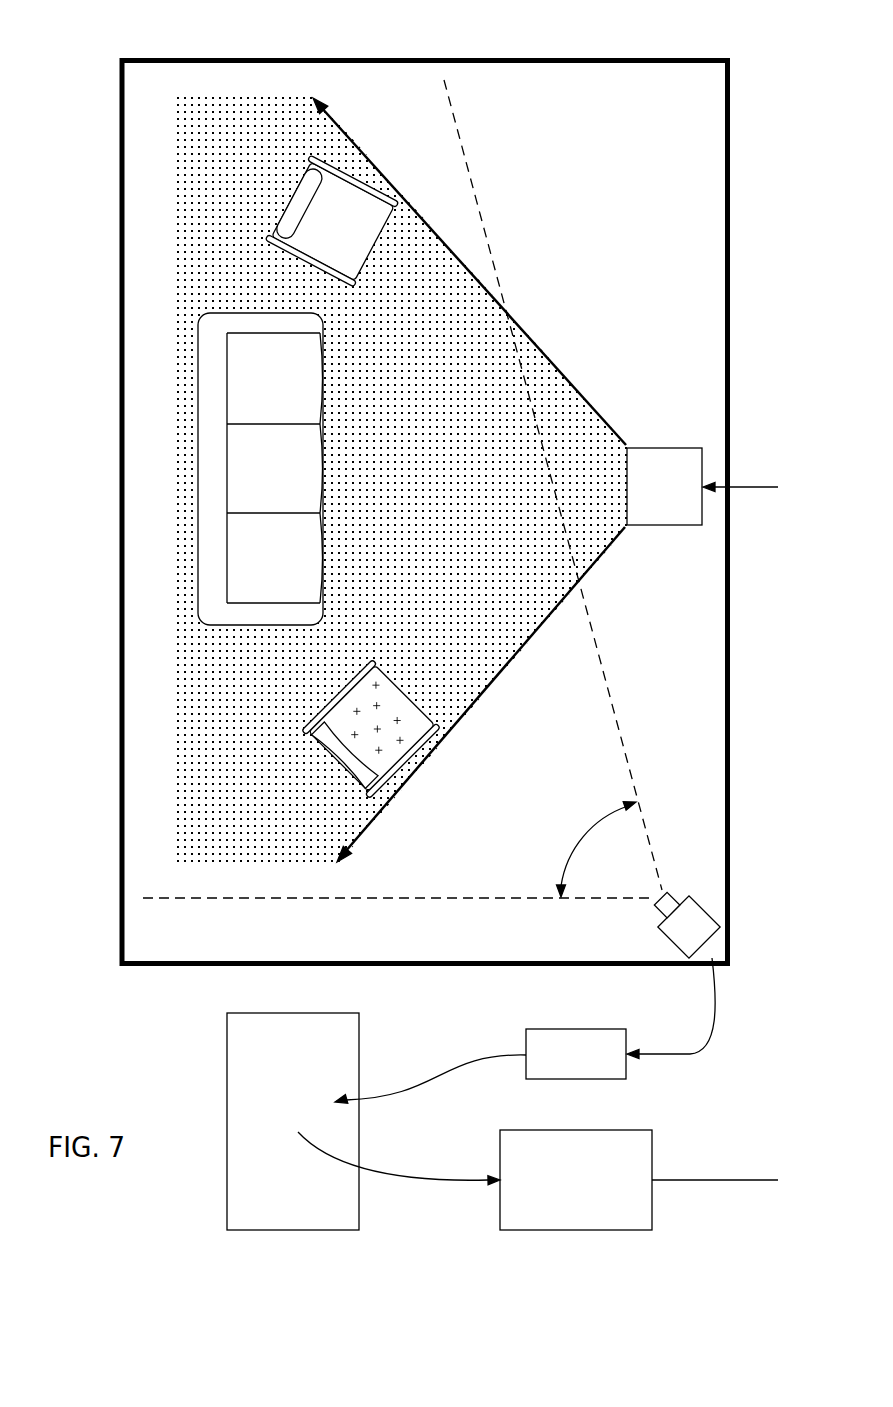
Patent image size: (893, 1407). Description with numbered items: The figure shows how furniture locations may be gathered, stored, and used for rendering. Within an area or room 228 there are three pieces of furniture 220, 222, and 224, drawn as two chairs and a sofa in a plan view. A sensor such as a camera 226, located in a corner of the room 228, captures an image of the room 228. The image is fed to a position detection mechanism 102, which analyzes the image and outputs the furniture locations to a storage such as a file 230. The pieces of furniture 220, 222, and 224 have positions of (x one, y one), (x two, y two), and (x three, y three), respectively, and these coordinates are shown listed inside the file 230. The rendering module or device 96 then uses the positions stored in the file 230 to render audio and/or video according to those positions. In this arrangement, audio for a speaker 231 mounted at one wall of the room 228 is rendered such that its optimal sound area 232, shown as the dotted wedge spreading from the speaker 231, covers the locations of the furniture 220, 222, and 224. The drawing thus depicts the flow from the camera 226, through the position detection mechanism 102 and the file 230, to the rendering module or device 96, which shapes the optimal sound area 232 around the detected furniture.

The area or room 228 is at (419, 60).
The optimal sound area 232 is at (568, 420).
The furniture 220 is at (331, 221).
The furniture 222 is at (260, 469).
The furniture 224 is at (403, 753).
The speaker 231 is at (702, 499).
The camera 226 is at (625, 920).
The position detection mechanism 102 is at (592, 1065).
The file 230 is at (293, 1148).
The rendering module or device 96 is at (620, 1193).